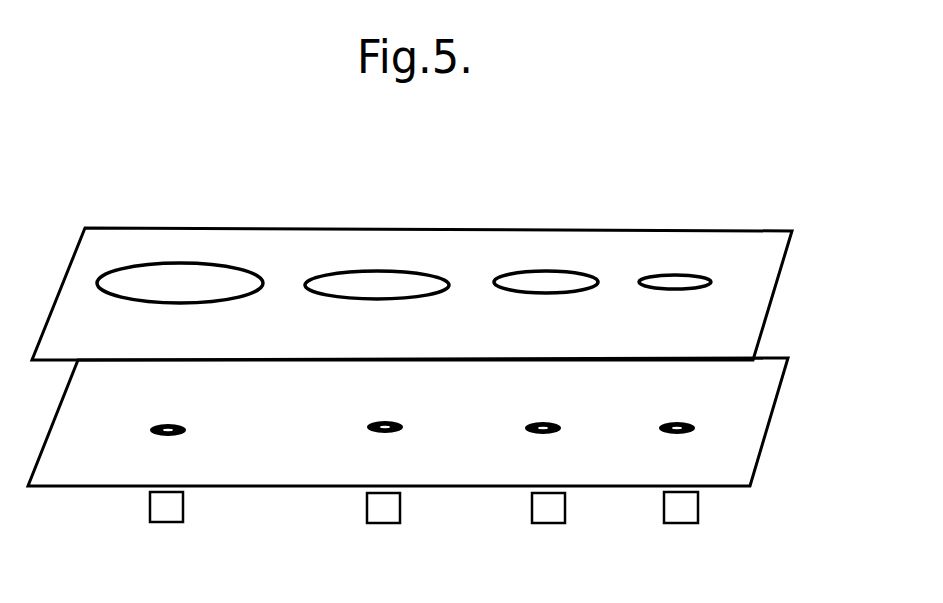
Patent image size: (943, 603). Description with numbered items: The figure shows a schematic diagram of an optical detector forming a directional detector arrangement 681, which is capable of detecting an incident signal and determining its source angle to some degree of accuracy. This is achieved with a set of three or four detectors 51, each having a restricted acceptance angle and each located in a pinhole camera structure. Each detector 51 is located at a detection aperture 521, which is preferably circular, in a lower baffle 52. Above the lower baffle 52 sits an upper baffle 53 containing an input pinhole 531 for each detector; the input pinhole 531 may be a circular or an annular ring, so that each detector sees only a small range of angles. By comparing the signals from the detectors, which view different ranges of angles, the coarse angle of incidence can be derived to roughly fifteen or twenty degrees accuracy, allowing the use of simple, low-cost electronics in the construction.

The directional detector arrangement 681 is at (271, 148).
The upper baffle 53 is at (780, 271).
The input pinhole 531 is at (341, 273).
The lower baffle 52 is at (768, 431).
The detection aperture 521 is at (370, 432).
The light receiving elements 51 is at (547, 523).